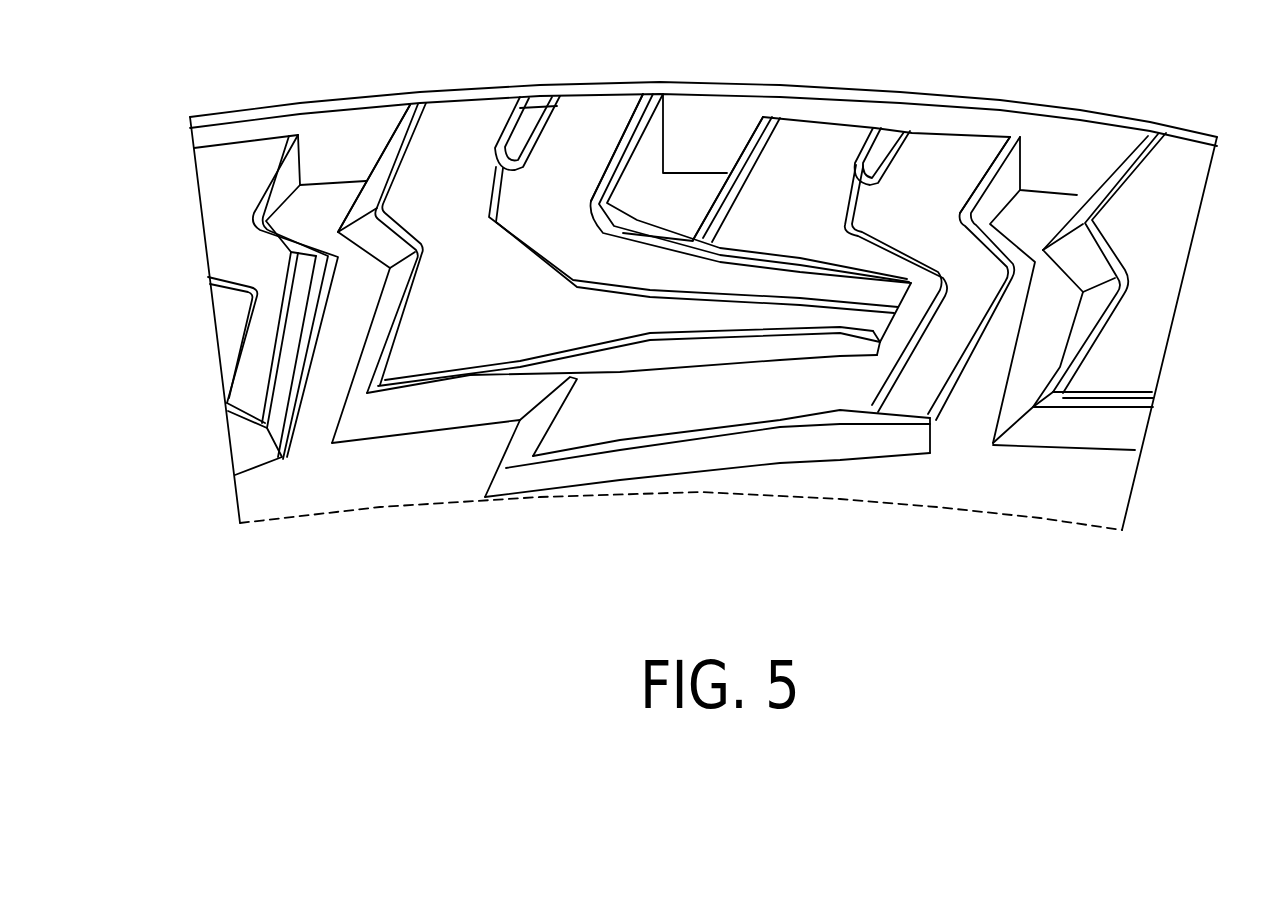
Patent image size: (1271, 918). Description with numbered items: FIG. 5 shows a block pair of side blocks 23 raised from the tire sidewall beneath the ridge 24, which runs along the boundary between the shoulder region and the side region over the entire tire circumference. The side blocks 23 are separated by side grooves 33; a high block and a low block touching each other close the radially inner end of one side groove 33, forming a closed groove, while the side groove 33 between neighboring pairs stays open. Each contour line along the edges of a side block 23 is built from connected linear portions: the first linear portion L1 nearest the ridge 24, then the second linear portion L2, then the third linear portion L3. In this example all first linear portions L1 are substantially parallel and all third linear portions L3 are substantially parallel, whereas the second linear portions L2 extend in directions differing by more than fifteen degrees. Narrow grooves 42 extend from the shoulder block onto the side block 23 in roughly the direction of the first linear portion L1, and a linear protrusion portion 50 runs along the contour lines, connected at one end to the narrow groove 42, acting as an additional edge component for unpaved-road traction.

The ridge 24 is at (1187, 133).
The side block 23 is at (470, 117).
The narrow groove 42 is at (530, 110).
The side groove 33 is at (313, 205).
The linear protrusion portion 50 is at (720, 295).
The first linear portion L1 is at (380, 163).
The second linear portion L2 is at (403, 220).
The third linear portion L3 is at (387, 313).